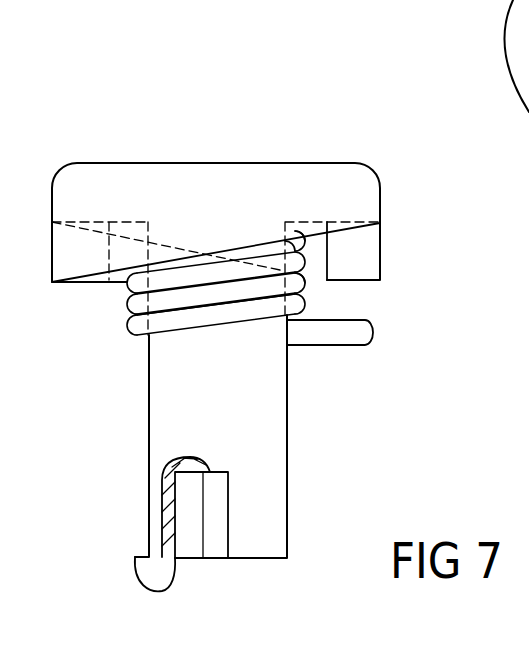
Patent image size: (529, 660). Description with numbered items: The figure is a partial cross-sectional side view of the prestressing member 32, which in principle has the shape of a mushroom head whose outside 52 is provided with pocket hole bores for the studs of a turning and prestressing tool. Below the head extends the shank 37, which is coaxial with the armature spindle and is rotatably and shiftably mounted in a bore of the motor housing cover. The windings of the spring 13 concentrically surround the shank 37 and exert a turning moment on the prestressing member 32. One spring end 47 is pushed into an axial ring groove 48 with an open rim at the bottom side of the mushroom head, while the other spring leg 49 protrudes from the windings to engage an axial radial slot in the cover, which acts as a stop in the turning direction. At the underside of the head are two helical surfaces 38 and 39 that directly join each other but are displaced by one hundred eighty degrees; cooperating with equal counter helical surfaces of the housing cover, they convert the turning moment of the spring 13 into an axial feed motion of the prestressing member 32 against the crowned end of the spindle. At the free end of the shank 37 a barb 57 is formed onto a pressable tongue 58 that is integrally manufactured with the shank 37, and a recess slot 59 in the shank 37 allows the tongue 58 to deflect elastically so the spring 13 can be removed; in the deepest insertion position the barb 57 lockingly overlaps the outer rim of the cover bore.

The prestressing member 32 is at (207, 127).
The outside of the mushroom head 52 is at (108, 162).
The spring end 47 is at (297, 243).
The axial ring groove 48 is at (318, 255).
The helical surface 39 is at (317, 280).
The helical surface 38 is at (128, 317).
The spring leg 13 is at (182, 323).
The shank 37 is at (267, 437).
The spring leg 49 is at (355, 345).
The recess slot 59 is at (190, 525).
The pressable tongue 58 is at (163, 507).
The barb 57 is at (145, 570).